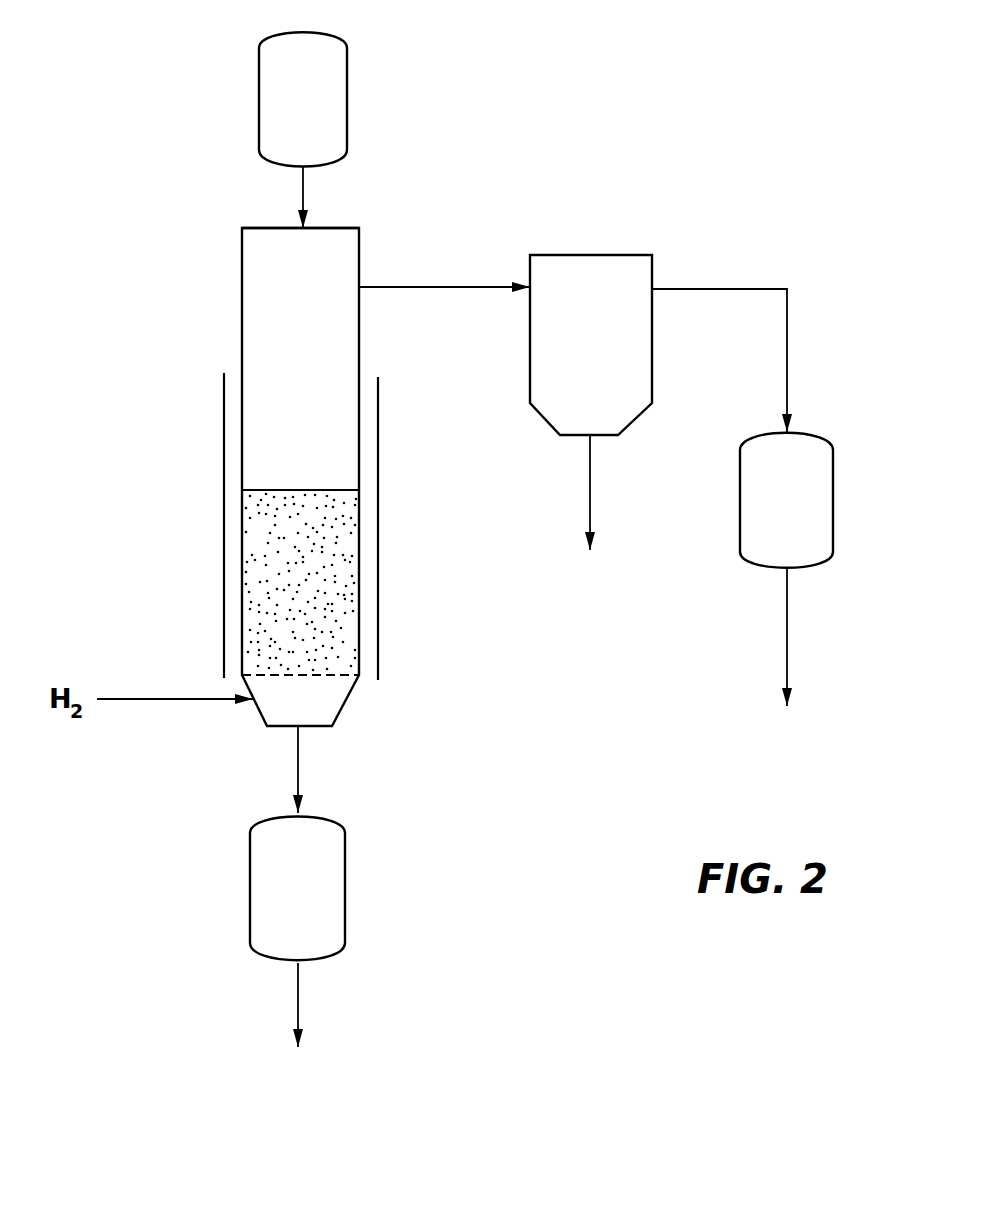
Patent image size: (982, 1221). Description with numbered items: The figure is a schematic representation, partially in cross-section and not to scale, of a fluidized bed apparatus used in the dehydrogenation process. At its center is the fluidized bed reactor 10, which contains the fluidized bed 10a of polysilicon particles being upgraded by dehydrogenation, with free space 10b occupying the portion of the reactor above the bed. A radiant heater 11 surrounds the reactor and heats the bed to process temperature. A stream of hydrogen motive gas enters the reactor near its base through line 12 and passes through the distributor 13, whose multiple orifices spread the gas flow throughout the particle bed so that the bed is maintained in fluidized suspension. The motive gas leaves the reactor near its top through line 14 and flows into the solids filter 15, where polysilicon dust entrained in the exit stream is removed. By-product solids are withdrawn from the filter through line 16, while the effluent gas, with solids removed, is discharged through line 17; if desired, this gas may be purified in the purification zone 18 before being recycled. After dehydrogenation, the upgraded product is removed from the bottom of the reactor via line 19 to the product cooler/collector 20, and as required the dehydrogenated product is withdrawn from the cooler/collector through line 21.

The fluidized bed reactor 10 is at (270, 335).
The fluidized bed 10a is at (332, 537).
The free space 10b is at (342, 350).
The radiant heater 11 is at (223, 493).
The line 12 is at (160, 698).
The distributor 13 is at (295, 677).
The line 14 is at (460, 289).
The solids filter 15 is at (610, 275).
The line 16 is at (592, 490).
The line 17 is at (759, 289).
The purification zone 18 is at (818, 470).
The line 19 is at (302, 763).
The product cooler/collector 20 is at (327, 855).
The line 21 is at (302, 998).